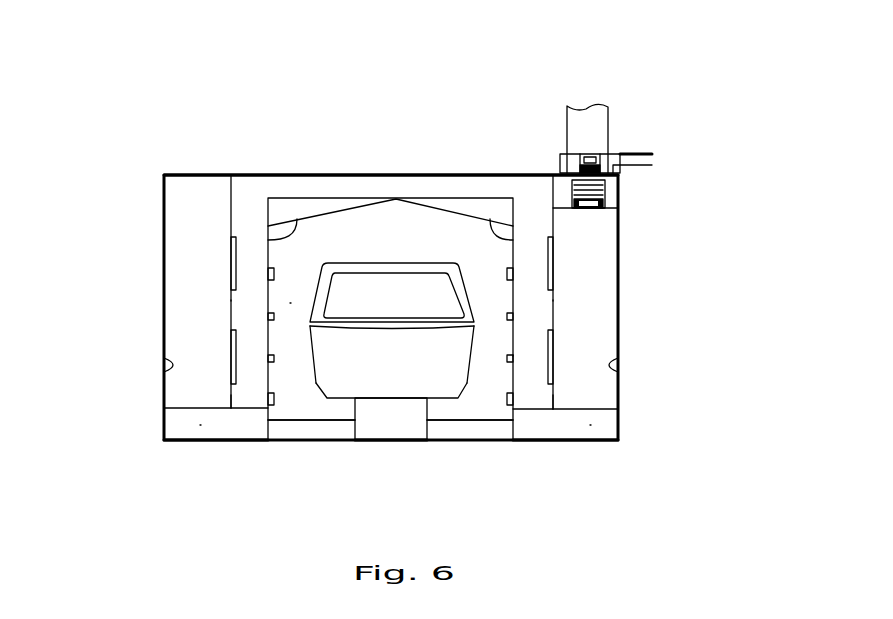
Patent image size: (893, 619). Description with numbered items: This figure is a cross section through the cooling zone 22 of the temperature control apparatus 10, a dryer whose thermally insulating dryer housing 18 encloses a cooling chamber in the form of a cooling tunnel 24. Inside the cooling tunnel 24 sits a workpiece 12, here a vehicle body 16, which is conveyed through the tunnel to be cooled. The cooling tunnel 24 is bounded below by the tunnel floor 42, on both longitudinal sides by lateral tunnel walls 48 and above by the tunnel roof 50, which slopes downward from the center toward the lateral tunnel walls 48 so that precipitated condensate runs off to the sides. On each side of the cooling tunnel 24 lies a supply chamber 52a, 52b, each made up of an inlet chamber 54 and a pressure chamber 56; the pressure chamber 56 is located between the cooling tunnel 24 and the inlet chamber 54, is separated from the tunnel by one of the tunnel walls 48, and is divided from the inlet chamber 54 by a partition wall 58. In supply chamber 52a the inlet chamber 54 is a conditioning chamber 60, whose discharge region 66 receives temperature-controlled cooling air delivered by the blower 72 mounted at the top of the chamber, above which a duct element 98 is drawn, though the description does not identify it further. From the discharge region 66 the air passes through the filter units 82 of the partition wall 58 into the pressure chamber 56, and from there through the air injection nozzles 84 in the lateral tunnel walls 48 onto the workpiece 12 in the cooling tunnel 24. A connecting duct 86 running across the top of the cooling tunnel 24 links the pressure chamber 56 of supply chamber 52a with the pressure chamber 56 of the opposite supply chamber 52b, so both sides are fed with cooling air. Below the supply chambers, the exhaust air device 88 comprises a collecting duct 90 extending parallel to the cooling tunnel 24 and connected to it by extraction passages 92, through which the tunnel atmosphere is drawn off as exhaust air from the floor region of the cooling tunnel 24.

The temperature control apparatus 10 is at (406, 252).
The workpieces 12 is at (358, 313).
The vehicle body 16 is at (415, 340).
The dryer housing 18 is at (253, 165).
The cooling zone 22 is at (176, 168).
The cooling tunnel 24 is at (335, 412).
The tunnel floor 42 is at (452, 442).
The lateral tunnel walls 48 is at (297, 219).
The tunnel roof 50 is at (396, 198).
The supply chamber 52a is at (600, 305).
The supply chamber 52b is at (190, 295).
The inlet chamber 54 is at (165, 372).
The pressure chamber 56 is at (245, 195).
The partition wall 58 is at (228, 394).
The conditioning chamber 60 is at (616, 272).
The discharge region 66 is at (185, 412).
The blower 72 is at (606, 196).
The filter units 82 is at (231, 250).
The air injection nozzles 84 is at (290, 303).
The connecting duct 86 is at (433, 173).
The exhaust air device 88 is at (646, 88).
The collecting duct 90 is at (225, 433).
The extraction passages 92 is at (284, 433).
The exhaust duct 98 is at (597, 121).